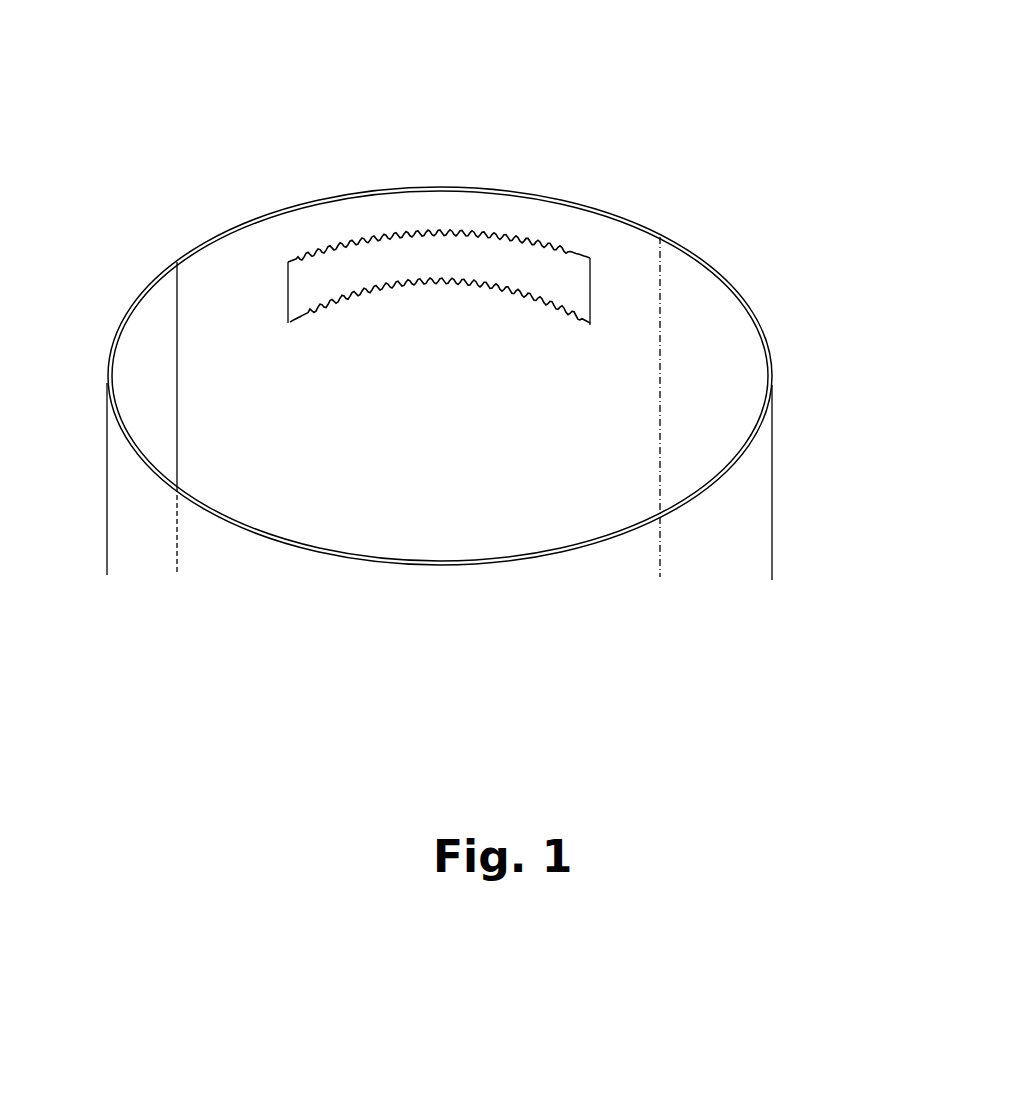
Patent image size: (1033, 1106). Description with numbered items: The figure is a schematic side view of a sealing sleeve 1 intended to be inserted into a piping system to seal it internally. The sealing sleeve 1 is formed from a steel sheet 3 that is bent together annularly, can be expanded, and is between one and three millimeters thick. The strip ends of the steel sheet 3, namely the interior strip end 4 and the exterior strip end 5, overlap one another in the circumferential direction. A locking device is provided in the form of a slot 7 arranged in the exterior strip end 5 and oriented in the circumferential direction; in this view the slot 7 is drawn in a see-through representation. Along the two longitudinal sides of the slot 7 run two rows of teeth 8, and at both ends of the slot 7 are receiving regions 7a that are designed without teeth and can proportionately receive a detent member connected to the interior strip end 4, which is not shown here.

The sealing sleeve 1 is at (146, 233).
The steel sheet 3 is at (740, 507).
The interior strip end 4 is at (196, 260).
The exterior strip end 5 is at (645, 228).
The slot 7 is at (591, 175).
The receiving region 7a is at (307, 283).
The rows of teeth 8 is at (413, 233).